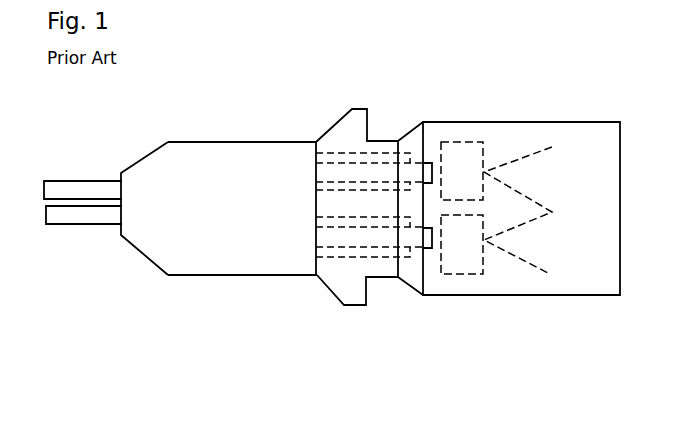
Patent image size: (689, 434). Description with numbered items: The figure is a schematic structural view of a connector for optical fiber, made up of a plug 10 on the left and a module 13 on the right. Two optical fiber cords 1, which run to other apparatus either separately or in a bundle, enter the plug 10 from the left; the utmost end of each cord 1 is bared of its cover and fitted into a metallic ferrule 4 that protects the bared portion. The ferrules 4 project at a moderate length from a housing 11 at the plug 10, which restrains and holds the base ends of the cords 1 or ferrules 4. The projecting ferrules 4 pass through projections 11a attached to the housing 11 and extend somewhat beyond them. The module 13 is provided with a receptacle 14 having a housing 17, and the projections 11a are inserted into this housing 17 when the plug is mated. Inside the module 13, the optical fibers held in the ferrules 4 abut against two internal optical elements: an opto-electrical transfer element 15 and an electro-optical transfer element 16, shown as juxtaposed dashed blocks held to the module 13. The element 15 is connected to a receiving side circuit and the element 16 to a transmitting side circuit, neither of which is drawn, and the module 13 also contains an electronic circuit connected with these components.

The optical fiber cord 1 is at (83, 185).
The plug 10 is at (225, 278).
The housing 11 is at (264, 152).
The projection 11a is at (345, 152).
The metallic ferrule 4 is at (381, 172).
The module 13 is at (524, 121).
The receptacle 14 is at (354, 298).
The opto-electrical transfer element 15 is at (468, 158).
The electro-optical transfer element 16 is at (466, 253).
The housing 17 is at (382, 268).